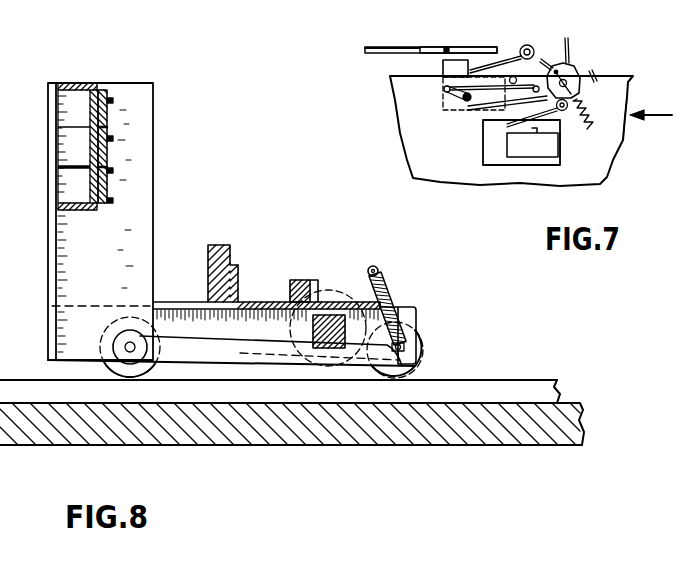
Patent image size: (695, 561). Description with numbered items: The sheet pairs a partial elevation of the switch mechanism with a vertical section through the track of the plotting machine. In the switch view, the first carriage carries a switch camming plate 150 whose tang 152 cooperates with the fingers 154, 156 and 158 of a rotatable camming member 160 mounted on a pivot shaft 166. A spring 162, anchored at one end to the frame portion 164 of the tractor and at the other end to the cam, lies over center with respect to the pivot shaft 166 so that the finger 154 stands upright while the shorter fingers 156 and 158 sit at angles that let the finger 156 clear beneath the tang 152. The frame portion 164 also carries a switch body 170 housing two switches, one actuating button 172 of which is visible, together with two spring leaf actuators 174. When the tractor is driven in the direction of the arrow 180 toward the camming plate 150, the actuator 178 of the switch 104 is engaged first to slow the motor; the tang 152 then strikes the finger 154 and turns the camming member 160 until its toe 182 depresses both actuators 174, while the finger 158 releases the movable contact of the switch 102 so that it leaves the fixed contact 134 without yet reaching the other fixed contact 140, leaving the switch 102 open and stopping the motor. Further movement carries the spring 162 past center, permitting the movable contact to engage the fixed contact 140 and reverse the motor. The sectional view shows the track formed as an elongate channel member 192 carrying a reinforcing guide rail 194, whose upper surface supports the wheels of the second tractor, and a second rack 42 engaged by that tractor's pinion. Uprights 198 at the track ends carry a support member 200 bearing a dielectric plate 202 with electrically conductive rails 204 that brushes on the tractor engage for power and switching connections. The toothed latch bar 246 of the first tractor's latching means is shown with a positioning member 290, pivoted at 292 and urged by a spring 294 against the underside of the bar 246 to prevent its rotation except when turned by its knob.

In FIG. 8, the second rack 42 is at (299, 280).
In FIG. 7, the switch 102 is at (470, 110).
In FIG. 7, the switch 104 is at (452, 68).
In FIG. 7, the fixed contact 134 is at (497, 107).
In FIG. 7, the fixed contact 140 is at (513, 76).
In FIG. 7, the switch camming plate 150 is at (379, 46).
In FIG. 7, the tang 152 is at (431, 46).
In FIG. 7, the finger 154 is at (566, 38).
In FIG. 7, the finger 156 is at (548, 60).
In FIG. 7, the finger 158 is at (562, 114).
In FIG. 7, the rotatable camming member 160 is at (572, 68).
In FIG. 7, the spring 162 is at (618, 128).
In FIG. 7, the frame portion 164 is at (614, 156).
In FIG. 7, the pivot shaft 166 is at (577, 73).
In FIG. 7, the switch body 170 is at (512, 158).
In FIG. 7, the actuating button 172 is at (532, 145).
In FIG. 7, the spring leaf actuators 174 is at (562, 140).
In FIG. 7, the actuator 178 is at (505, 66).
In FIG. 7, the arrow 180 is at (665, 112).
In FIG. 7, the toe 182 is at (583, 95).
In FIG. 8, the elongate channel member 192 is at (257, 300).
In FIG. 8, the guide rail 194 is at (217, 258).
In FIG. 8, the uprights 198 is at (154, 226).
In FIG. 8, the support member 200 is at (76, 82).
In FIG. 8, the dielectric plate 202 is at (112, 181).
In FIG. 8, the electrically conductive rails 204 is at (110, 136).
In FIG. 8, the latch bar 246 is at (330, 298).
In FIG. 8, the positioning member 290 is at (244, 353).
In FIG. 8, the pivot 292 is at (128, 344).
In FIG. 8, the spring 294 is at (403, 305).